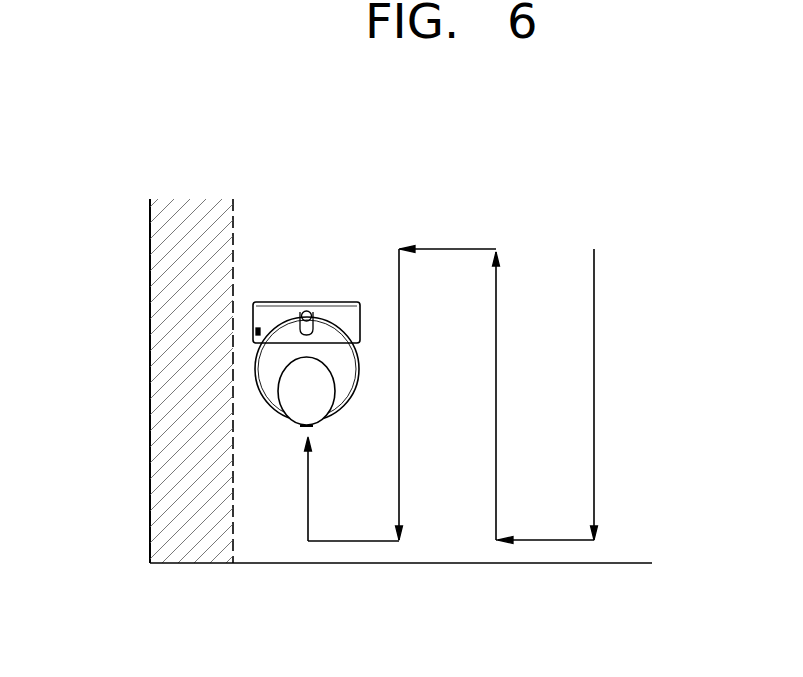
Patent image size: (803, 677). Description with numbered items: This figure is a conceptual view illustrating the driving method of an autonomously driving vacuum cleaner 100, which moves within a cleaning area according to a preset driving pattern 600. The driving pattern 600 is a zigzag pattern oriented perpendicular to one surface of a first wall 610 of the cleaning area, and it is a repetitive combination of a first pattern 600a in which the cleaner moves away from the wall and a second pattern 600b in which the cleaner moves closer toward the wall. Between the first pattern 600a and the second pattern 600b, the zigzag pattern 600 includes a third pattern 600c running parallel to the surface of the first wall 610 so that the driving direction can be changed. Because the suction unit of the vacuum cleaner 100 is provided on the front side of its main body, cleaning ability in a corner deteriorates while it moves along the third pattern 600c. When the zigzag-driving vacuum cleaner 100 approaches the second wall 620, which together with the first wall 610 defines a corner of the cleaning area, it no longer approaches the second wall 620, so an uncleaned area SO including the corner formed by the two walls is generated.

The vacuum cleaner 100 is at (312, 280).
The second wall 620 is at (150, 270).
The uncleaned area SO is at (190, 397).
The first wall 610 is at (626, 563).
The driving pattern 600 is at (491, 408).
The first pattern 600a is at (496, 298).
The second pattern 600b is at (399, 298).
The third pattern 600c is at (353, 541).